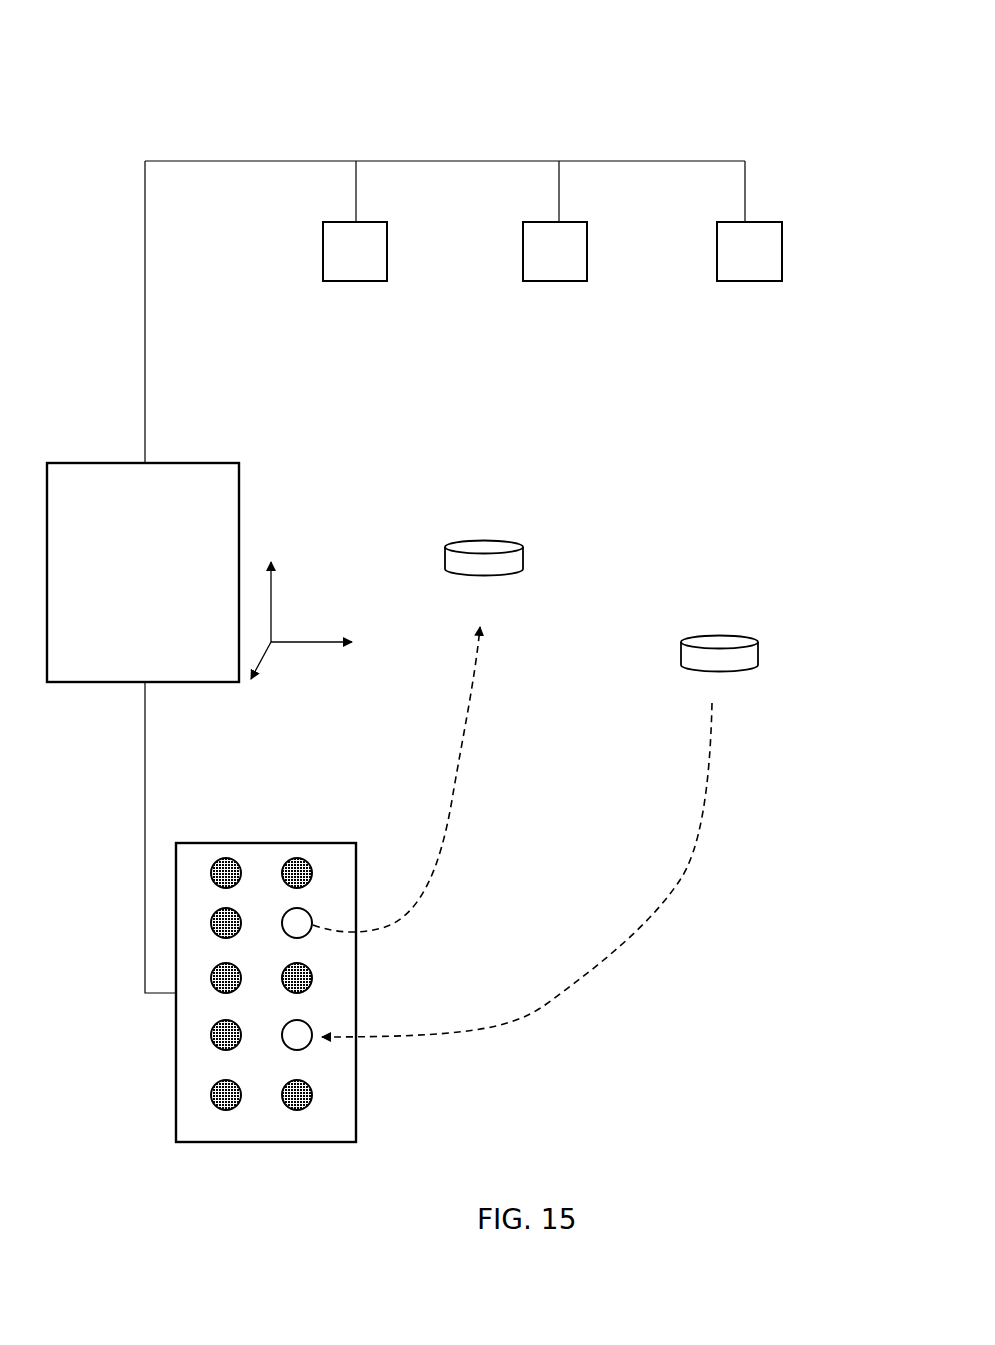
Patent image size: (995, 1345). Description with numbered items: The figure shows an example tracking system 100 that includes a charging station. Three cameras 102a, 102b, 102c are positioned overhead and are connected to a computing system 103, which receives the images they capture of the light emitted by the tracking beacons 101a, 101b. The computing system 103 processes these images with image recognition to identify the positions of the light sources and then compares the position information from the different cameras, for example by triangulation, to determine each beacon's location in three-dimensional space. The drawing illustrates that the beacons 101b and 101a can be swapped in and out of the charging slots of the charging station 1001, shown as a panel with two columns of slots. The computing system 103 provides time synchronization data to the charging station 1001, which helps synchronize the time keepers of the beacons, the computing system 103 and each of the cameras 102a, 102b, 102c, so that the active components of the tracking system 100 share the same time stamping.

The tracking system 100 is at (606, 95).
The tracking beacon 101a is at (759, 658).
The tracking beacon 101b is at (483, 577).
The camera 102a is at (746, 281).
The camera 102b is at (580, 240).
The camera 102c is at (375, 243).
The computing system 103 is at (229, 481).
The indicator panel 1001 is at (255, 1142).